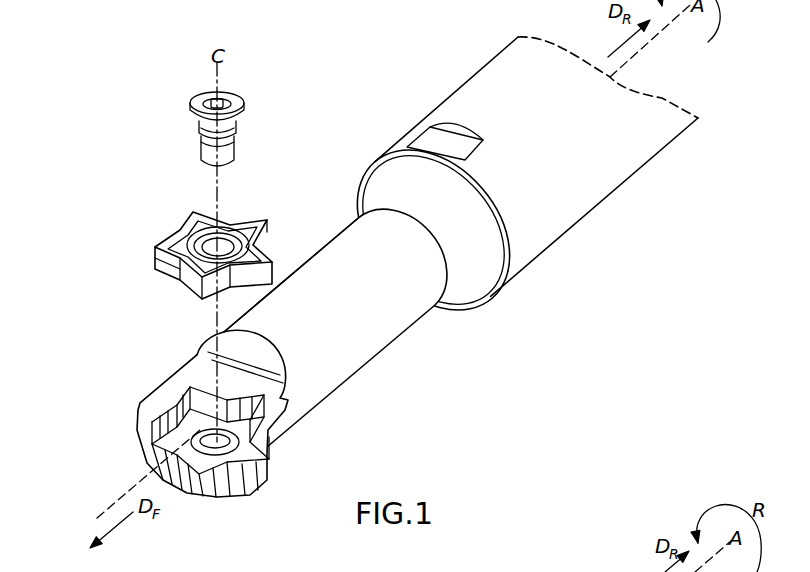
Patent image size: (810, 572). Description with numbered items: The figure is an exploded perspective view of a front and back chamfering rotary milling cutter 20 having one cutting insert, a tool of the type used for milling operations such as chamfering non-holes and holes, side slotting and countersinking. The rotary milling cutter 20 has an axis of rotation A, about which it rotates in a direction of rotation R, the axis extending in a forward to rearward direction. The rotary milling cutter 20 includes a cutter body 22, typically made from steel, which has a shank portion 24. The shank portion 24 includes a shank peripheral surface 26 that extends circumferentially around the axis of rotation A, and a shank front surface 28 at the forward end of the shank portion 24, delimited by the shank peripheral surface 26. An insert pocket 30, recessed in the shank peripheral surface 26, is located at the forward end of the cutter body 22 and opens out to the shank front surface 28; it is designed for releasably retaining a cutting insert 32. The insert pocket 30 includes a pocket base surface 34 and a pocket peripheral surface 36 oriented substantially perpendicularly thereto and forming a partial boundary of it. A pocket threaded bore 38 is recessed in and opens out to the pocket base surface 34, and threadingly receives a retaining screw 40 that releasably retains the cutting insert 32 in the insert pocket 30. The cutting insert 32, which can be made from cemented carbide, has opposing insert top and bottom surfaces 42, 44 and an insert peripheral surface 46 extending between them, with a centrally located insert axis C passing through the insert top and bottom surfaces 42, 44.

The rotary milling cutter 20 is at (394, 300).
The cutter body 22 is at (618, 222).
The shank portion 24 is at (417, 345).
The shank peripheral surface 26 is at (338, 345).
The shank front surface 28 is at (140, 453).
The insert pocket 30 is at (250, 425).
The cutting insert 32 is at (214, 245).
The pocket base surface 34 is at (253, 490).
The pocket peripheral surface 36 is at (253, 402).
The pocket threaded bore 38 is at (207, 497).
The retaining screw 40 is at (252, 124).
The insert top surface 42 is at (165, 232).
The insert bottom surface 44 is at (178, 283).
The insert peripheral surface 46 is at (150, 265).